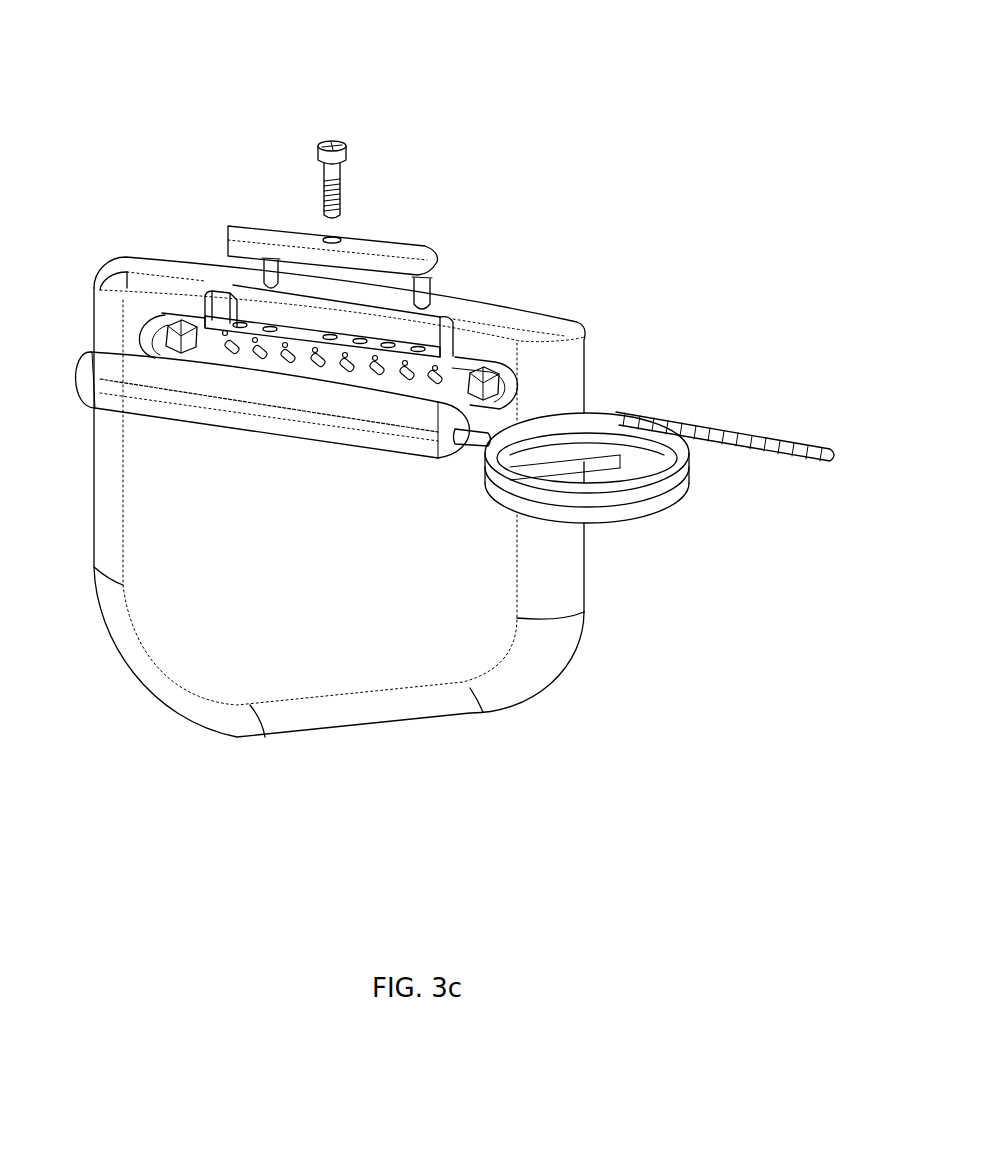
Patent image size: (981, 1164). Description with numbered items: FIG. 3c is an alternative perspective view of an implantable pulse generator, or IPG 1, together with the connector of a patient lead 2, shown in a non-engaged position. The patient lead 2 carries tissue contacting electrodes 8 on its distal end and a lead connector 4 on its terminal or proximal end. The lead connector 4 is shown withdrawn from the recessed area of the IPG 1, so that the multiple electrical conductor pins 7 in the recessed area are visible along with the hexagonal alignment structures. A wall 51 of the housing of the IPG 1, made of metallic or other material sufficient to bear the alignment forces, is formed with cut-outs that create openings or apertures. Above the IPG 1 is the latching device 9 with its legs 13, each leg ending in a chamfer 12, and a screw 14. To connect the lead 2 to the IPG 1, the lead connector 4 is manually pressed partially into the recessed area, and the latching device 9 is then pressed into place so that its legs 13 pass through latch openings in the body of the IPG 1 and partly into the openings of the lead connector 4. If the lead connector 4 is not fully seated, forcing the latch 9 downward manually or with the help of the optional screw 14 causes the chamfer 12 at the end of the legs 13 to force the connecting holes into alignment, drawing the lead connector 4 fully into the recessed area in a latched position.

The implantable pulse generator 1 is at (339, 497).
The patient lead 2 is at (657, 518).
The lead connector 4 is at (241, 418).
The electrical conductor pins 7 is at (444, 373).
The tissue contacting electrodes 8 is at (810, 439).
The latching device 9 is at (391, 256).
The chamfer 12 is at (435, 304).
The legs 13 is at (433, 276).
The screw 14 is at (336, 153).
The wall 51 is at (221, 292).